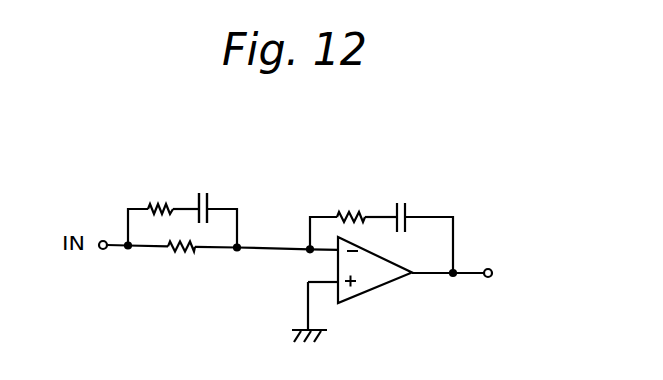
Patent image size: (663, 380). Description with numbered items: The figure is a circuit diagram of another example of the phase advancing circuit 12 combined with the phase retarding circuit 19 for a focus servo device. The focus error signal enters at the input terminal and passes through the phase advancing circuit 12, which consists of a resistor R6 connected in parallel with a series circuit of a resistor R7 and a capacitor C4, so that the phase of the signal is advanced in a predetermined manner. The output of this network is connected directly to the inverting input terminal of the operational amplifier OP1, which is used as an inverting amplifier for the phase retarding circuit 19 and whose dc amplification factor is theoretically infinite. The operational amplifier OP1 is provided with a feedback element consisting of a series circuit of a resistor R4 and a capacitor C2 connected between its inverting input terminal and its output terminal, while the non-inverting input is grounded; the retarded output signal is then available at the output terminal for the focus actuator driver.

The phase advancing circuit 12 is at (169, 246).
The phase retarding circuit 19 is at (424, 239).
The resistor R7 is at (170, 205).
The capacitor C4 is at (205, 192).
The resistor R6 is at (195, 269).
The resistor R4 is at (353, 211).
The capacitor C2 is at (400, 202).
The operational amplifier OP1 is at (372, 293).